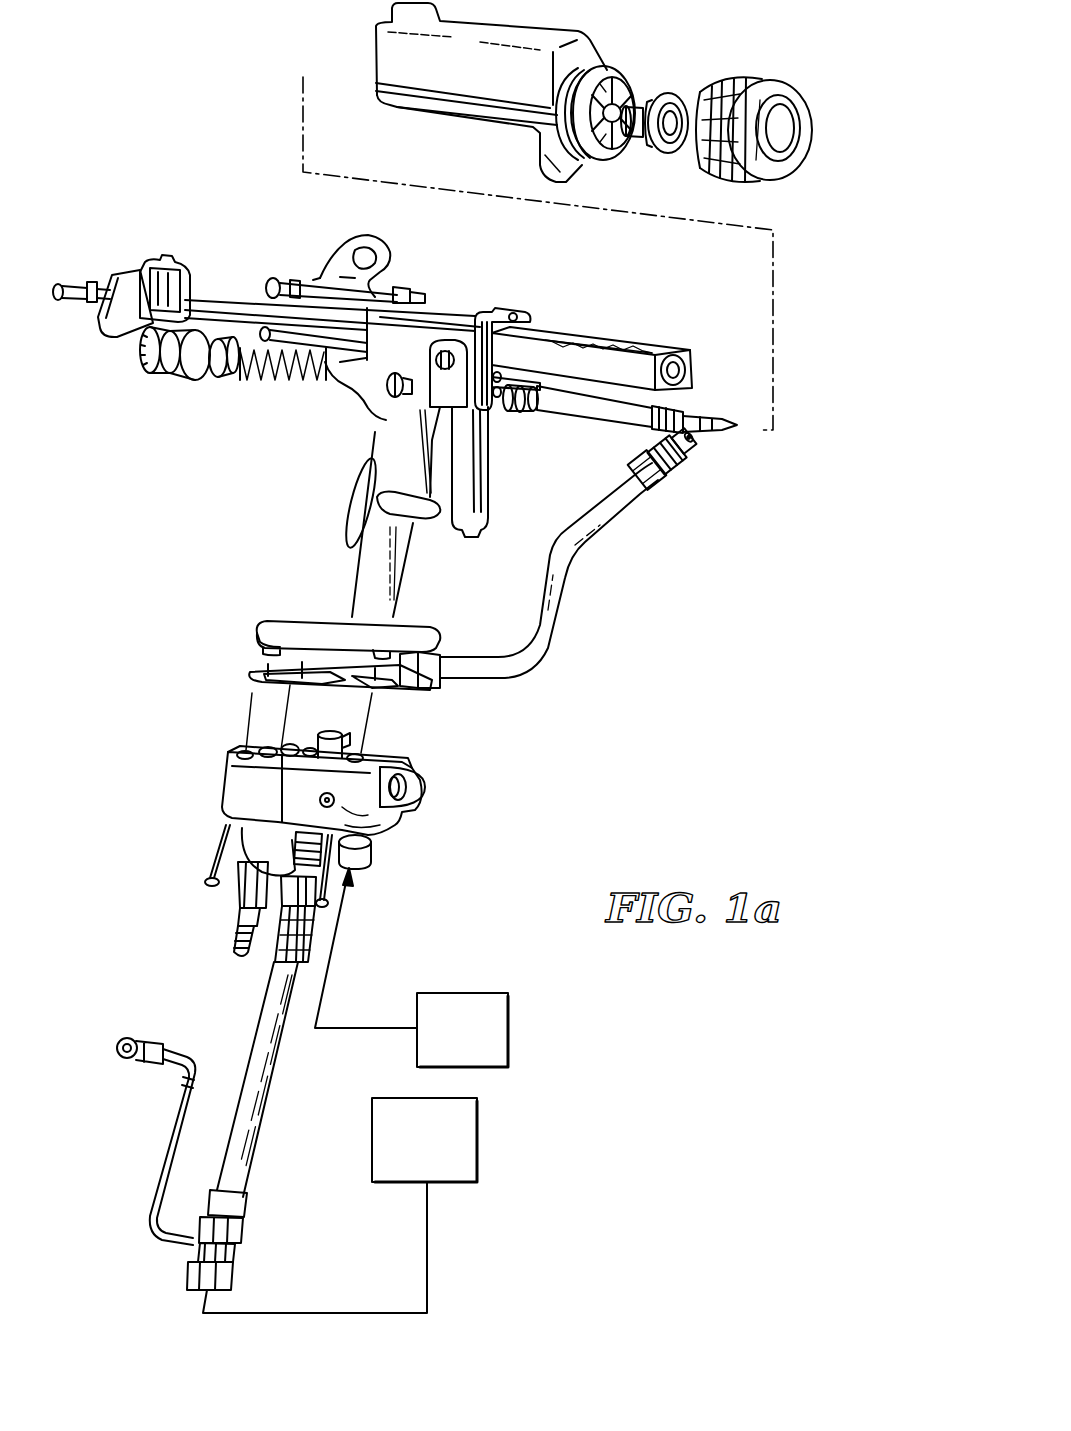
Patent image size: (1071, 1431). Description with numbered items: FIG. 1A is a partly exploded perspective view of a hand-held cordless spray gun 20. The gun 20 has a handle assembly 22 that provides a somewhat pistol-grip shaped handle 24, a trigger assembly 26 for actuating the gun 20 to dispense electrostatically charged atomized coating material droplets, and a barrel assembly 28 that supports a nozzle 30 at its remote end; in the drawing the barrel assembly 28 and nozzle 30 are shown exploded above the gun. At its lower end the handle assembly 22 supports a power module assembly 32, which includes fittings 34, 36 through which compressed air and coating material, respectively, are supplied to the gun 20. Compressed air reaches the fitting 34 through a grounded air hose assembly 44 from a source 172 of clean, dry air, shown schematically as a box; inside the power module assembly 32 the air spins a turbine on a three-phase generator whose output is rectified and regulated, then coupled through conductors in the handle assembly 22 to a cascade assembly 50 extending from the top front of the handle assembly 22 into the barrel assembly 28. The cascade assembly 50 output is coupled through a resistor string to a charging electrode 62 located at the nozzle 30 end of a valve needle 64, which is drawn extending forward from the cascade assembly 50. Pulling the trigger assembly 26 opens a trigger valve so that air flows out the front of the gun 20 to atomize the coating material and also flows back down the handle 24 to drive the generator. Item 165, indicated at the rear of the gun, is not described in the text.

The hand-held cordless spray gun 20 is at (618, 685).
The handle assembly 22 is at (255, 496).
The handle 24 is at (345, 562).
The trigger assembly 26 is at (486, 445).
The barrel assembly 28 is at (610, 65).
The nozzle 30 is at (772, 118).
The power module assembly 32 is at (405, 828).
The fitting 34 is at (300, 842).
The fitting 36 is at (370, 846).
The grounded air hose assembly 44 is at (288, 1040).
The cascade assembly 50 is at (608, 338).
The charging electrode 62 is at (750, 430).
The valve needle 64 is at (597, 414).
The nozzle adjustment assembly 165 is at (160, 256).
The source of clean, dry air 172 is at (457, 1152).